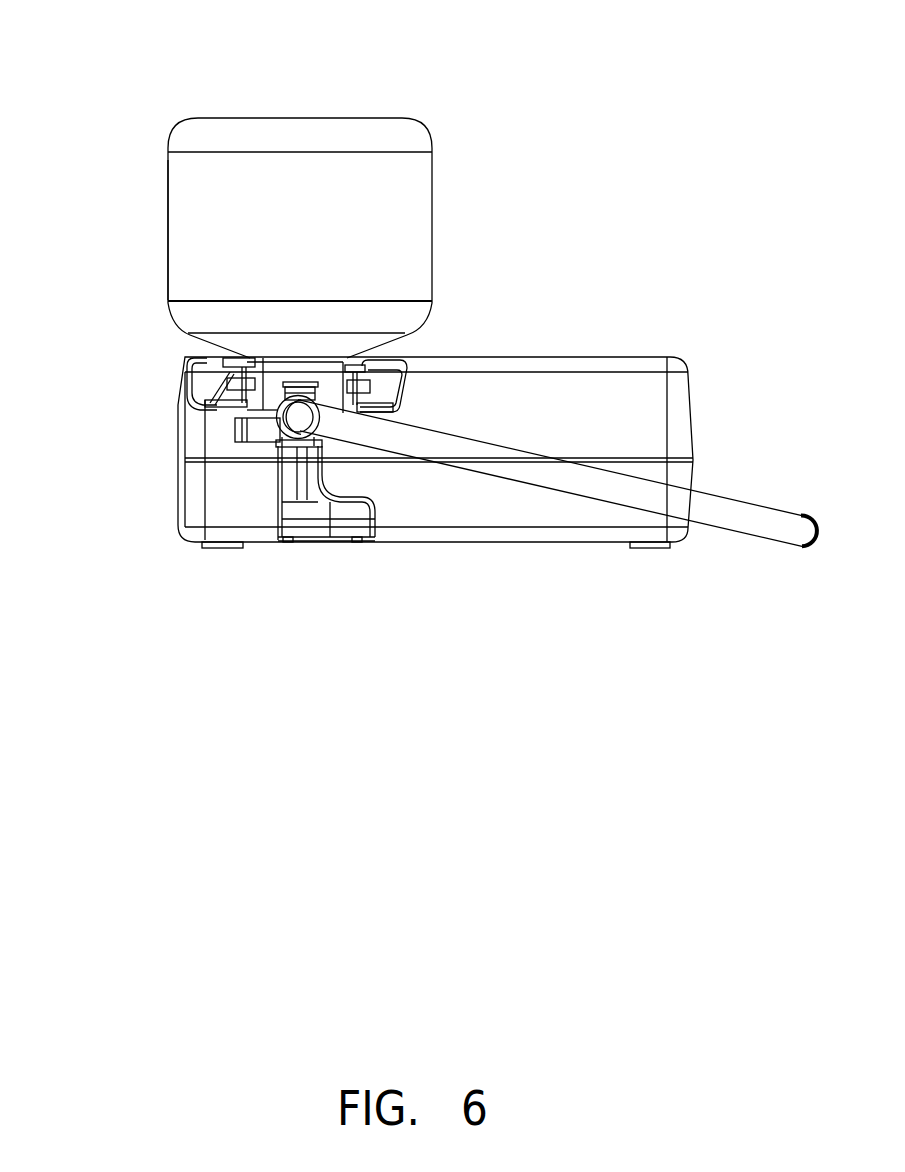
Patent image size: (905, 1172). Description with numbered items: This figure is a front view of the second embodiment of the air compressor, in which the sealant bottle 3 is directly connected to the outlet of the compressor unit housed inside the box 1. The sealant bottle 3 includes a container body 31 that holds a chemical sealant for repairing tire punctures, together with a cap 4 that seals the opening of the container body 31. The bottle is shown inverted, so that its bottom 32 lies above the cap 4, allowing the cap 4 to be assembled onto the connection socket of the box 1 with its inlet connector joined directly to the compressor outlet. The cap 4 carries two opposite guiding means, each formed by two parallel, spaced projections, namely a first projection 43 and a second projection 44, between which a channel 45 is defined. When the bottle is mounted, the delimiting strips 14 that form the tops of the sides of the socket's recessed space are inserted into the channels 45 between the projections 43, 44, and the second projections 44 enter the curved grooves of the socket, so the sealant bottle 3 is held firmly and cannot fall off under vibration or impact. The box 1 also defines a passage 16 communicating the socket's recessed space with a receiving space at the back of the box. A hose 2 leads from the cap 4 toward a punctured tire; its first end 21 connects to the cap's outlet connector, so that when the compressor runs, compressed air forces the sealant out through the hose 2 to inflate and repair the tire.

The box 1 is at (538, 384).
The hose 2 is at (737, 517).
The sealant bottle 3 is at (241, 184).
The container body 31 is at (185, 229).
The bottom 32 is at (298, 117).
The cap 4 is at (210, 393).
The delimiting strip 14 is at (230, 380).
The passage 16 is at (318, 512).
The first end 21 is at (297, 395).
The first projection 43 is at (250, 367).
The second projection 44 is at (223, 390).
The channel 45 is at (240, 388).